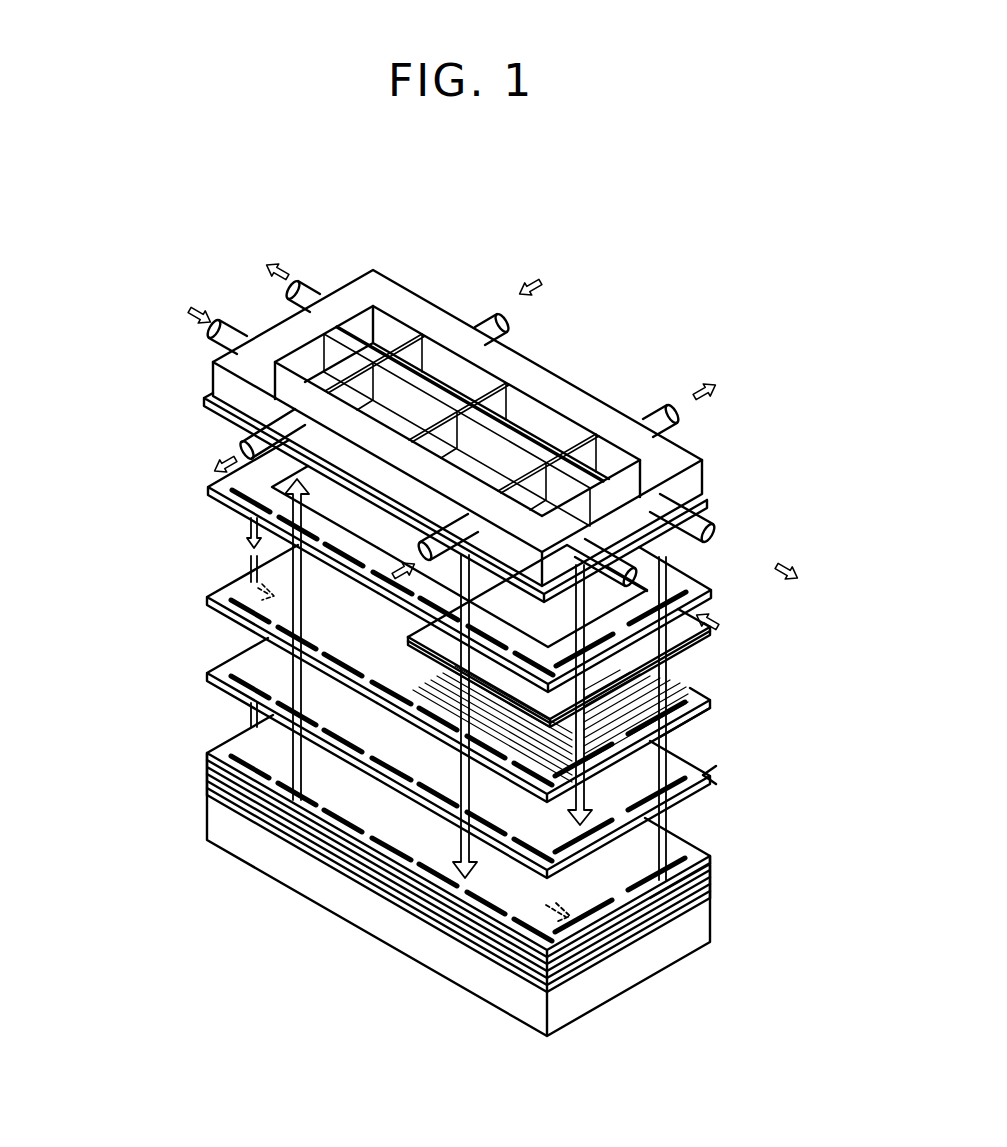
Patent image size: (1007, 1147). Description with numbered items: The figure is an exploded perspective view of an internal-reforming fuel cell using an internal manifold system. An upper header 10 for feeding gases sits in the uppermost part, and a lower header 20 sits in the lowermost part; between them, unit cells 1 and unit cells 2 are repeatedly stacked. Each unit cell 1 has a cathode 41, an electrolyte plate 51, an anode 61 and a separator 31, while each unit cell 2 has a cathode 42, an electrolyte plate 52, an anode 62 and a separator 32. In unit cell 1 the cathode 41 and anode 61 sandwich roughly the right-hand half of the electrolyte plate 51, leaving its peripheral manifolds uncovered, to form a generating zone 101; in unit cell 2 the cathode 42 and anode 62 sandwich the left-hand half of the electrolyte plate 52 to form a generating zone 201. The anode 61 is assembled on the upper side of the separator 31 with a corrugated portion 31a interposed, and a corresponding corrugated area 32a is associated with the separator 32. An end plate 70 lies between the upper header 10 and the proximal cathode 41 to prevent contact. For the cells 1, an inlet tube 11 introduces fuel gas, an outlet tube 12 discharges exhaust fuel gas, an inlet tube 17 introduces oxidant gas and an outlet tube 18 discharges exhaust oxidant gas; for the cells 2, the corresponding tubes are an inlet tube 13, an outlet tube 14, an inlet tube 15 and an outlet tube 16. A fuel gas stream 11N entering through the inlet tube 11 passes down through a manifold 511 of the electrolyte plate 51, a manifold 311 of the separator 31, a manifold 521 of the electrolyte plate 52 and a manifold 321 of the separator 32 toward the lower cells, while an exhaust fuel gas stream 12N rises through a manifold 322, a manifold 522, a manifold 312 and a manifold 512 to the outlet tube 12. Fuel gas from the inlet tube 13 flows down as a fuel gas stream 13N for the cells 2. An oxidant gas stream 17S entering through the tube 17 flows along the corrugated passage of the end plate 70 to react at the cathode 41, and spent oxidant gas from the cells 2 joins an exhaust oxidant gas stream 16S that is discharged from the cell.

The unit cell 1 is at (492, 583).
The unit cell 2 is at (366, 815).
The upper header 10 is at (578, 385).
The inlet tube 11 is at (208, 345).
The outlet tube 12 is at (712, 526).
The inlet tube 13 is at (636, 552).
The outlet tube 14 is at (306, 292).
The inlet tube 15 is at (500, 312).
The outlet tube 16 is at (238, 448).
The inlet tube 17 is at (418, 552).
The outlet tube 18 is at (668, 404).
The lower header 20 is at (386, 942).
The separator 31 is at (704, 696).
The corrugated portion 31a is at (700, 708).
The separator 32 is at (421, 881).
The electrode area 32a is at (214, 802).
The cathode 41 is at (684, 566).
The cathode 42 is at (208, 678).
The electrolyte plate 51 is at (700, 580).
The electrolyte plate 52 is at (208, 700).
The anode 61 is at (676, 644).
The anode 62 is at (208, 738).
The end plate 70 is at (203, 400).
The generating zone 101 is at (616, 636).
The generating zone 201 is at (386, 828).
The manifold 311 is at (254, 590).
The manifold 312 is at (700, 740).
The manifold 321 is at (208, 752).
The manifold 322 is at (692, 878).
The manifold 511 is at (214, 492).
The manifold 512 is at (704, 584).
The manifold 521 is at (272, 664).
The manifold 522 is at (684, 800).
The fuel gas stream 11N is at (244, 533).
The exhaust fuel gas stream 12N is at (704, 768).
The fuel gas stream 13N is at (526, 877).
The exhaust oxidant gas stream 16S is at (272, 802).
The oxidant gas stream 17S is at (380, 890).